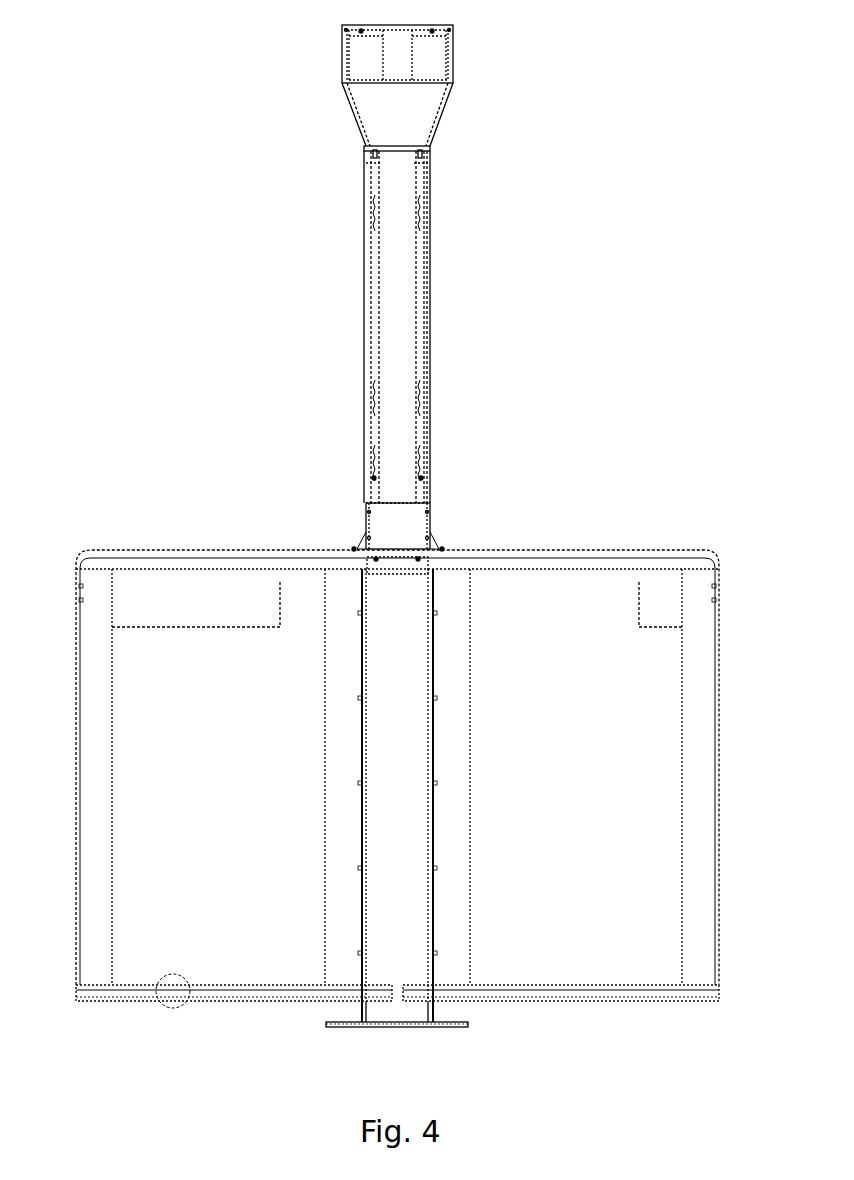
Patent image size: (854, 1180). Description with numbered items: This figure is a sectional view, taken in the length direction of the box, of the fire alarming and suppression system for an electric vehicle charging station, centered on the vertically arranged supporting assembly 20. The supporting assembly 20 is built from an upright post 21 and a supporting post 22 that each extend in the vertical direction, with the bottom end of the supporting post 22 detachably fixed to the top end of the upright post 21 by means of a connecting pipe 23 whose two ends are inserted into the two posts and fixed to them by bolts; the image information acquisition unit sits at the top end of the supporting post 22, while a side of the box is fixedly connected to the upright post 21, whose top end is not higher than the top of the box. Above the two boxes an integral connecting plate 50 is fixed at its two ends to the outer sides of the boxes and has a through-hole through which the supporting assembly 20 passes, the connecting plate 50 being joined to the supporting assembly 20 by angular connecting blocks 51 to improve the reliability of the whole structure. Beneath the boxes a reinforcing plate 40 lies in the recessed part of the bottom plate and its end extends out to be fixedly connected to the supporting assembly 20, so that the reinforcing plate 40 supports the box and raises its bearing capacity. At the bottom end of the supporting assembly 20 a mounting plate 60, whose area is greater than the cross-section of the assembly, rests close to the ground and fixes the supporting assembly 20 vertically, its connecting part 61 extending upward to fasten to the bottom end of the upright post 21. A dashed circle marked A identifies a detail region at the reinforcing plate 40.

The supporting assembly 20 is at (369, 830).
The upright post 21 is at (430, 738).
The supporting post 22 is at (430, 338).
The connecting pipe 23 is at (366, 528).
The reinforcing plate 40 is at (588, 1003).
The connecting plate 50 is at (600, 550).
The angular connecting block 51 is at (353, 548).
The mounting plate 60 is at (350, 1027).
The connecting part 61 is at (375, 1023).
The detail view A is at (172, 1008).